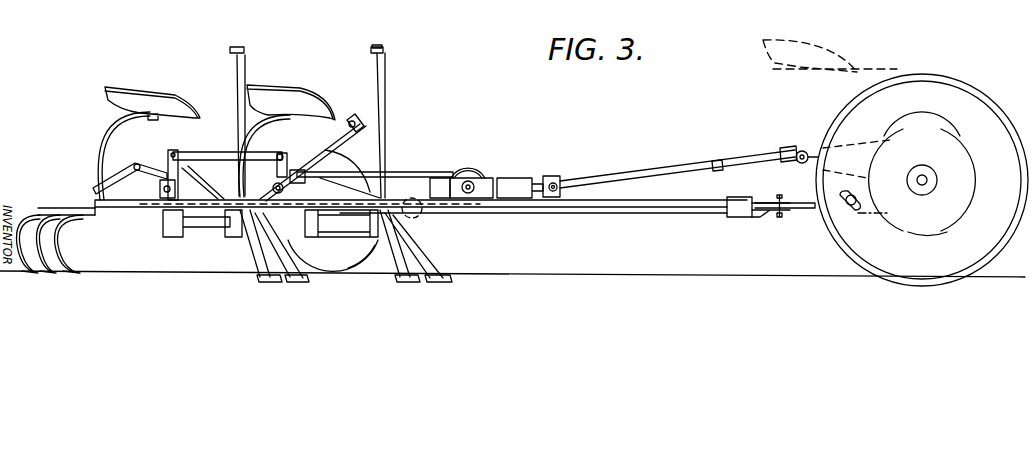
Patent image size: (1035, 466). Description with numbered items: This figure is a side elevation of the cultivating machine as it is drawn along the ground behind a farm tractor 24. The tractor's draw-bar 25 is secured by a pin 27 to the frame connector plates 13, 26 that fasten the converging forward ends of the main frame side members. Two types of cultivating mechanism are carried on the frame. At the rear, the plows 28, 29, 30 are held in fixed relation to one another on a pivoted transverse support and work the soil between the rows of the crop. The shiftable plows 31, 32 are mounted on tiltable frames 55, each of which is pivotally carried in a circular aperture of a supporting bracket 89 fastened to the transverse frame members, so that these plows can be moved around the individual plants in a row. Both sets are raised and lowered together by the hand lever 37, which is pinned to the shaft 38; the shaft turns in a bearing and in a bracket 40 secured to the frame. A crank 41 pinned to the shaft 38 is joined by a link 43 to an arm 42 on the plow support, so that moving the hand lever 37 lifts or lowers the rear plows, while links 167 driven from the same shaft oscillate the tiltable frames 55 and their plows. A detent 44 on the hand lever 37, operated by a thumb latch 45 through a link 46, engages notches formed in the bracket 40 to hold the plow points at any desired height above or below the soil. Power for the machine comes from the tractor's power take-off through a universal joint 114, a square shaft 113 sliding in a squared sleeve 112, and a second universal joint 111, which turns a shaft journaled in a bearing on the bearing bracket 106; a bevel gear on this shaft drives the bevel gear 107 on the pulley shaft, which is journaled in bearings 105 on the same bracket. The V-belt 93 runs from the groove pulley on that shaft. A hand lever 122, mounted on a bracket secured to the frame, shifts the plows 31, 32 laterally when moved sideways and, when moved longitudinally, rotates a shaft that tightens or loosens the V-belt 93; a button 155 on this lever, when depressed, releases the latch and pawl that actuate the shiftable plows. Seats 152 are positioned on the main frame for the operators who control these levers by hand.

The plate 13 is at (738, 199).
The farm tractor 24 is at (921, 68).
The draw-bar 25 is at (799, 212).
The plate 26 is at (740, 218).
The pin 27 is at (780, 196).
The plow 28 is at (26, 218).
The plow 29 is at (38, 237).
The plow 30 is at (60, 253).
The shiftable plow 31 is at (296, 282).
The shiftable plow 32 is at (262, 280).
The hand lever 37 is at (352, 148).
The shaft 38 is at (252, 228).
The bracket 40 is at (273, 165).
The crank 41 is at (292, 240).
The arm 42 is at (107, 186).
The link 43 is at (147, 163).
The detent 44 is at (300, 170).
The thumb latch 45 is at (360, 124).
The link 46 is at (346, 120).
The tiltable frame 55 is at (180, 165).
The supporting bracket 89 is at (165, 182).
The V-belt 93 is at (425, 173).
The bearing 105 is at (478, 190).
The bearing bracket 106 is at (454, 199).
The bevel gear 107 is at (469, 170).
The universal joint 111 is at (552, 177).
The squared sleeve 112 is at (625, 178).
The square shaft 113 is at (728, 160).
The universal joint 114 is at (797, 150).
The hand lever 122 is at (244, 55).
The seat 152 is at (128, 90).
The button 155 is at (379, 49).
The link 167 is at (228, 153).